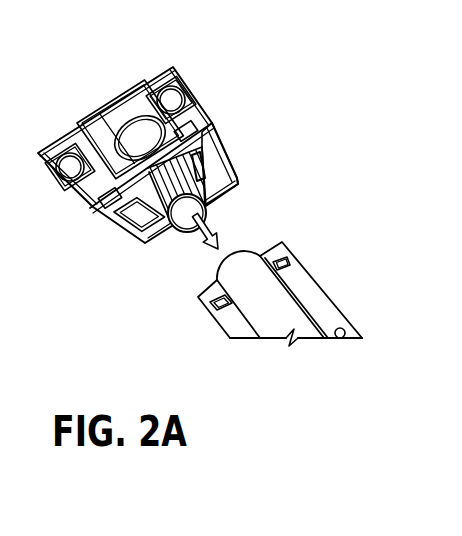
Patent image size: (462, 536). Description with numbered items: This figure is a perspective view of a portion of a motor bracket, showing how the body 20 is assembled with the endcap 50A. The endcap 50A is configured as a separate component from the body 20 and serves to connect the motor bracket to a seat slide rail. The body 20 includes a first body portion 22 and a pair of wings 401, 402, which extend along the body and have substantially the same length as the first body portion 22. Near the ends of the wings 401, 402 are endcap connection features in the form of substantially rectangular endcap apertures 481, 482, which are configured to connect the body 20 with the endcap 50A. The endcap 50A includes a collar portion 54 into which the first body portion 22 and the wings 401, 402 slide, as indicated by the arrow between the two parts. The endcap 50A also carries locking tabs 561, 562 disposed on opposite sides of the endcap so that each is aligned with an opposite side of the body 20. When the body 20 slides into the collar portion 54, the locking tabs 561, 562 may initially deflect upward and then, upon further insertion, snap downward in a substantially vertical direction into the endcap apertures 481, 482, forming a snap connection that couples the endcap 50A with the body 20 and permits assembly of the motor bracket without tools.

The endcap 50A is at (171, 148).
The collar portion 54 is at (227, 140).
The locking tab 561 is at (205, 172).
The locking tab 562 is at (143, 204).
The body 20 is at (267, 288).
The first body portion 22 is at (245, 251).
The wing 401 is at (210, 288).
The wing 402 is at (333, 263).
The endcap aperture 481 is at (291, 258).
The endcap aperture 482 is at (223, 325).